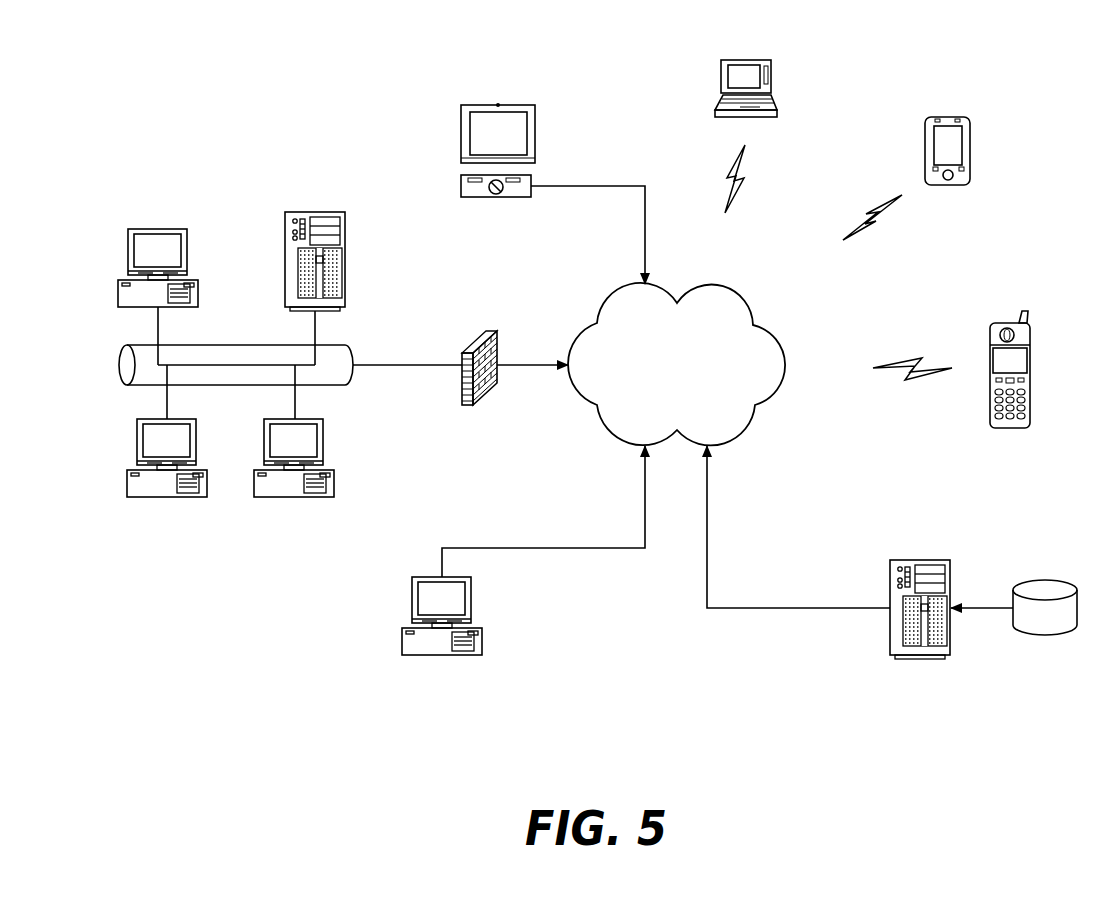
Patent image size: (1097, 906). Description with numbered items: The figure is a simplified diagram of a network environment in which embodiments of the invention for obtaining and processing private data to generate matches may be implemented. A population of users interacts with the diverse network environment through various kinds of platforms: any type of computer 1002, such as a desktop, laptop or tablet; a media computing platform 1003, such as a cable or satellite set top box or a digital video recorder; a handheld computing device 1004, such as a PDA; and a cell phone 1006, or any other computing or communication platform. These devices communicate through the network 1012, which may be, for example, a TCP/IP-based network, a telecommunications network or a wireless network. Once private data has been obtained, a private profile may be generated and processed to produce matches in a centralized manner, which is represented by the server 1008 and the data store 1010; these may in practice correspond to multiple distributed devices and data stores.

The computer 1002 is at (128, 255).
The media computing platform 1003 is at (461, 178).
The handheld computing device 1004 is at (925, 115).
The cell phone 1006 is at (995, 328).
The server 1008 is at (900, 562).
The data store 1010 is at (1045, 580).
The network 1012 is at (613, 300).